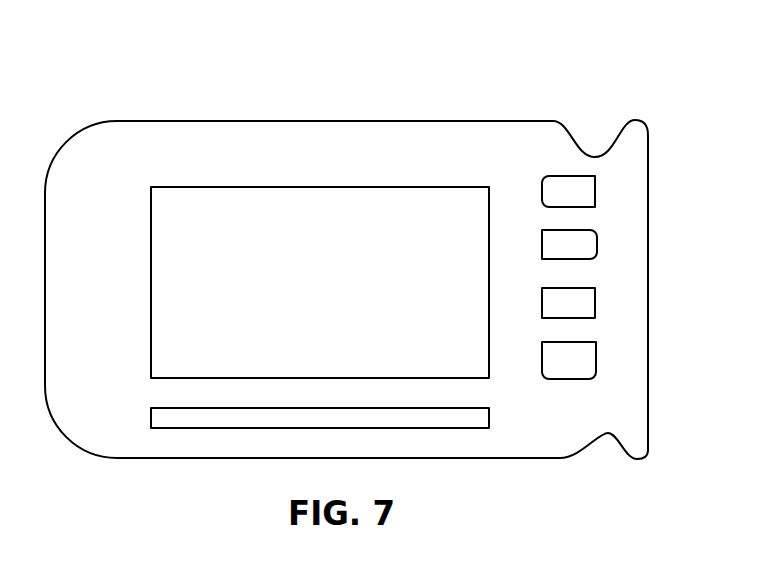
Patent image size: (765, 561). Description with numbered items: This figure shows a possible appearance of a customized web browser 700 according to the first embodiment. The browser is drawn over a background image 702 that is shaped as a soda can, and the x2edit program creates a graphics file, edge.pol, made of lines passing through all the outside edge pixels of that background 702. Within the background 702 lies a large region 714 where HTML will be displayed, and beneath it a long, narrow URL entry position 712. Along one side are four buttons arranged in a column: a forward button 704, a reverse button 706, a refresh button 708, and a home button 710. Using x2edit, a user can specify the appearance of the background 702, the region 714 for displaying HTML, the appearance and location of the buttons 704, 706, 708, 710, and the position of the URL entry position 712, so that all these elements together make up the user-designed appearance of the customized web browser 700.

The customized web browser 700 is at (346, 238).
The background image 702 is at (427, 138).
The forward button 704 is at (553, 192).
The reverse button 706 is at (587, 246).
The refresh button 708 is at (587, 310).
The home button 710 is at (587, 365).
The URL entry position 712 is at (490, 422).
The HTML display region 714 is at (345, 288).